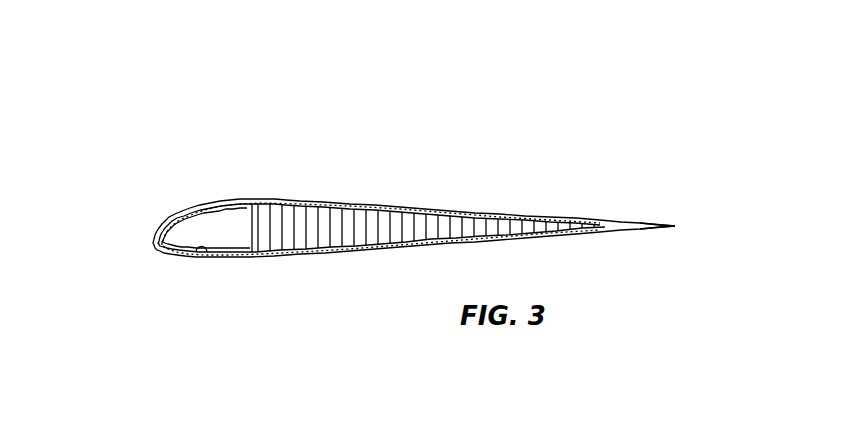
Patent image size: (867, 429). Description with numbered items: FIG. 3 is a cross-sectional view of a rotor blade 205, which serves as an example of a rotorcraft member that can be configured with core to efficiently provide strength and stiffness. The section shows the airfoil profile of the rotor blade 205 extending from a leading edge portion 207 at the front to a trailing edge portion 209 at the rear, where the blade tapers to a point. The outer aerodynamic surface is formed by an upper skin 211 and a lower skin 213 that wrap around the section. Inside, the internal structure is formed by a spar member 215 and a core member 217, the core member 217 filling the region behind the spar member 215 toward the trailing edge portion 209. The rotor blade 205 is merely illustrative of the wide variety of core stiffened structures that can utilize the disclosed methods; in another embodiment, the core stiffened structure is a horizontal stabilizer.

The rotor blade 205 is at (340, 158).
The leading edge portion 207 is at (158, 233).
The trailing edge portion 209 is at (678, 232).
The upper skin 211 is at (255, 204).
The lower skin 213 is at (237, 258).
The spar member 215 is at (199, 246).
The core member 217 is at (350, 230).